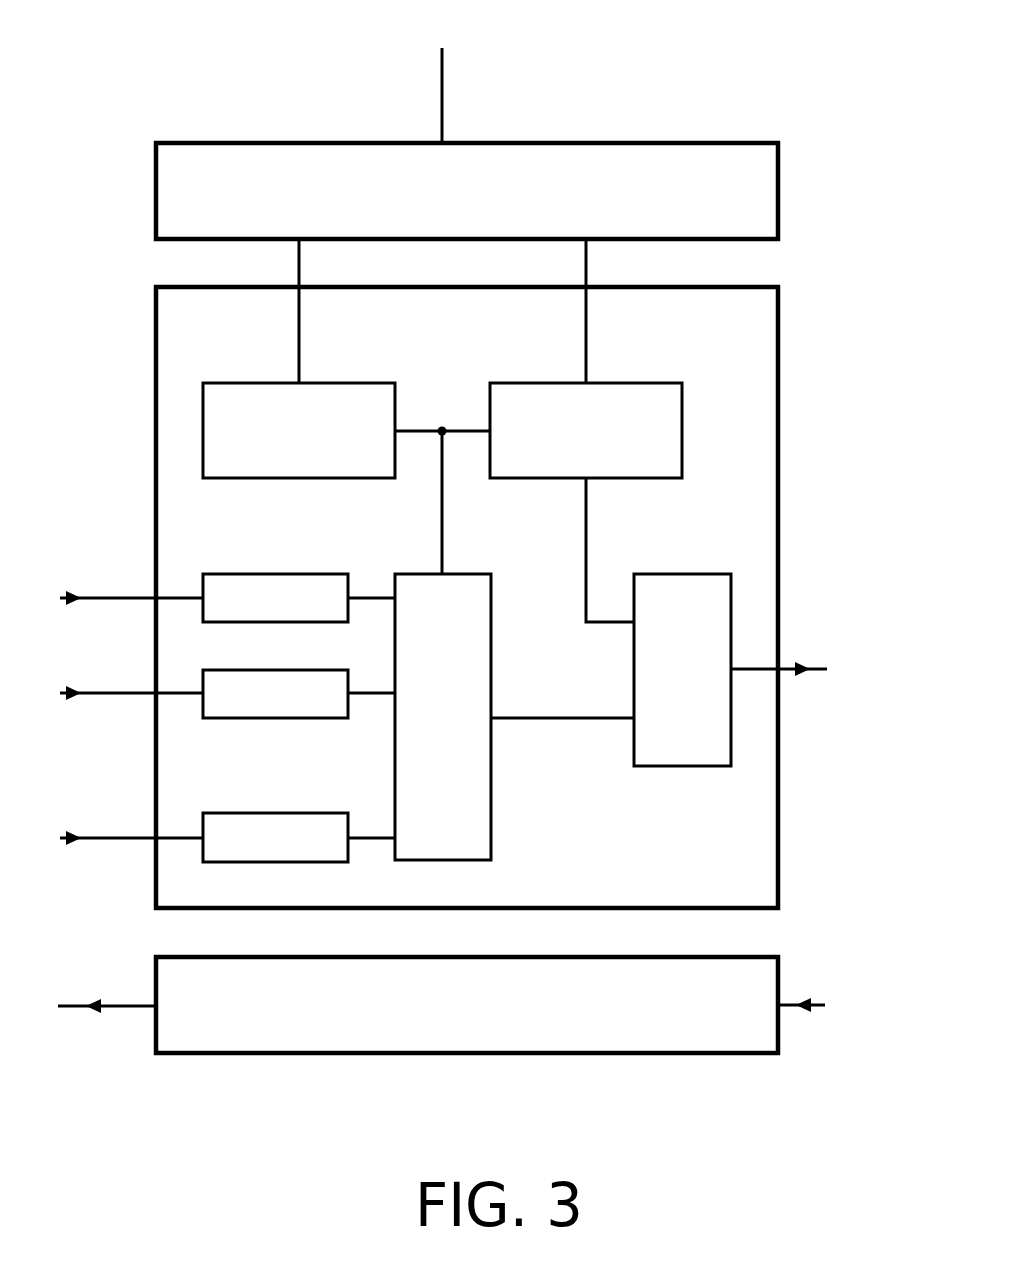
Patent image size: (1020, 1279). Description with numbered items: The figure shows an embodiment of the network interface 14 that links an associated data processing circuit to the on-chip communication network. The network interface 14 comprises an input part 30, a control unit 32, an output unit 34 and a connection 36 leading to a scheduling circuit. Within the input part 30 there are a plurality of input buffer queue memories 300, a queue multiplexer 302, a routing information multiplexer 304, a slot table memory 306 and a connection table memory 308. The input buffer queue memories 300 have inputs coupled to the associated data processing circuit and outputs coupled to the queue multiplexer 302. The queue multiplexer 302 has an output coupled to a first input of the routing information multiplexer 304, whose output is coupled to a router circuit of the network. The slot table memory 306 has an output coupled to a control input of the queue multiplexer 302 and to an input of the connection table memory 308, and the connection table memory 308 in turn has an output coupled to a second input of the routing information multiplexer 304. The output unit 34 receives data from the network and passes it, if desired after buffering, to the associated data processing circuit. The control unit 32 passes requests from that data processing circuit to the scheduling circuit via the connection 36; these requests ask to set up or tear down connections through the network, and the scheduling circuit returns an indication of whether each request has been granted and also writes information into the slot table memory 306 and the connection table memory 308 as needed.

The network interface 14 is at (772, 97).
The input part 30 is at (778, 399).
The control unit 32 is at (778, 196).
The output unit 34 is at (778, 979).
The connection 36 is at (442, 91).
The input buffer queue memories 300 is at (248, 574).
The queue multiplexer 302 is at (491, 834).
The routing information multiplexer 304 is at (688, 574).
The slot table memory 306 is at (367, 383).
The connection table memory 308 is at (520, 383).